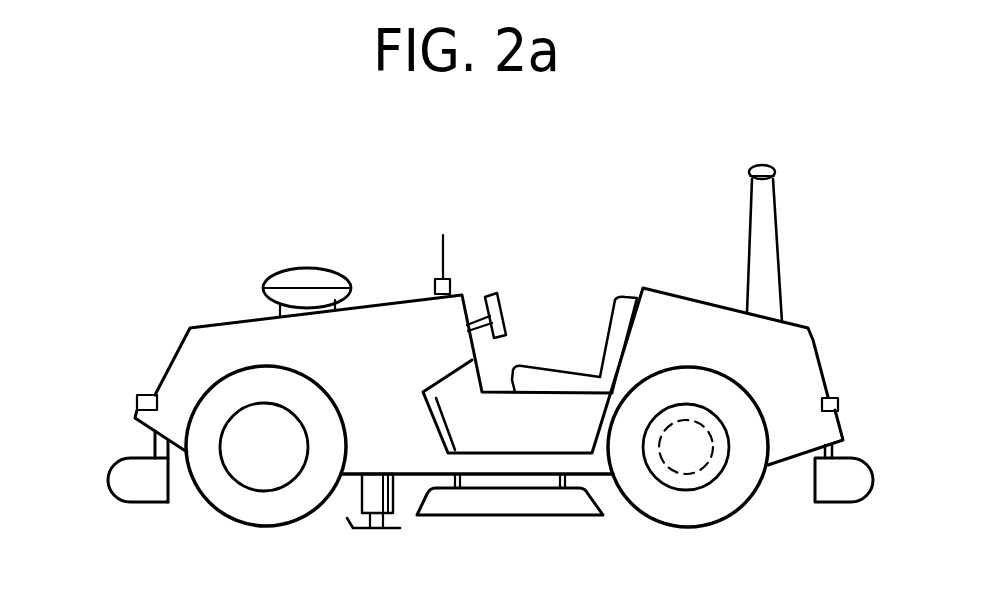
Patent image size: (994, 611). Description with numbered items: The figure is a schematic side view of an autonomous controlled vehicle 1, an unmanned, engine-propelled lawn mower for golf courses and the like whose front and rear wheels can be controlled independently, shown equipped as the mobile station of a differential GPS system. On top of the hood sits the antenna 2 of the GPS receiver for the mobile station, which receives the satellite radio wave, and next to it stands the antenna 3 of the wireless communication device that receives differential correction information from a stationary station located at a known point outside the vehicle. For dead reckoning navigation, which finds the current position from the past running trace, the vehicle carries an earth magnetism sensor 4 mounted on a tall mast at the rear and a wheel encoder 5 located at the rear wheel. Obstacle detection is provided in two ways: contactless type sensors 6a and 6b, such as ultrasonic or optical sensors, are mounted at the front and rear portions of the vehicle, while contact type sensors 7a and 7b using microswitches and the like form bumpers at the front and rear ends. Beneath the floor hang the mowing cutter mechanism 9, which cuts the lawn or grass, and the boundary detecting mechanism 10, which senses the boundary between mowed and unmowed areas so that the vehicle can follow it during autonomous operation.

The autonomous controlled vehicle 1 is at (565, 240).
The antenna of the GPS receiver for mobile station 2 is at (313, 267).
The antenna of the wireless communication device 3 is at (451, 282).
The earth magnetism sensor 4 is at (772, 166).
The wheel encoder 5 is at (703, 463).
The contactless type sensor 6a is at (137, 402).
The contactless type sensor 6b is at (838, 404).
The contact type sensor 7a is at (110, 480).
The contact type sensor 7b is at (873, 478).
The mowing cutter mechanism 9 is at (508, 515).
The boundary detecting mechanism 10 is at (373, 528).